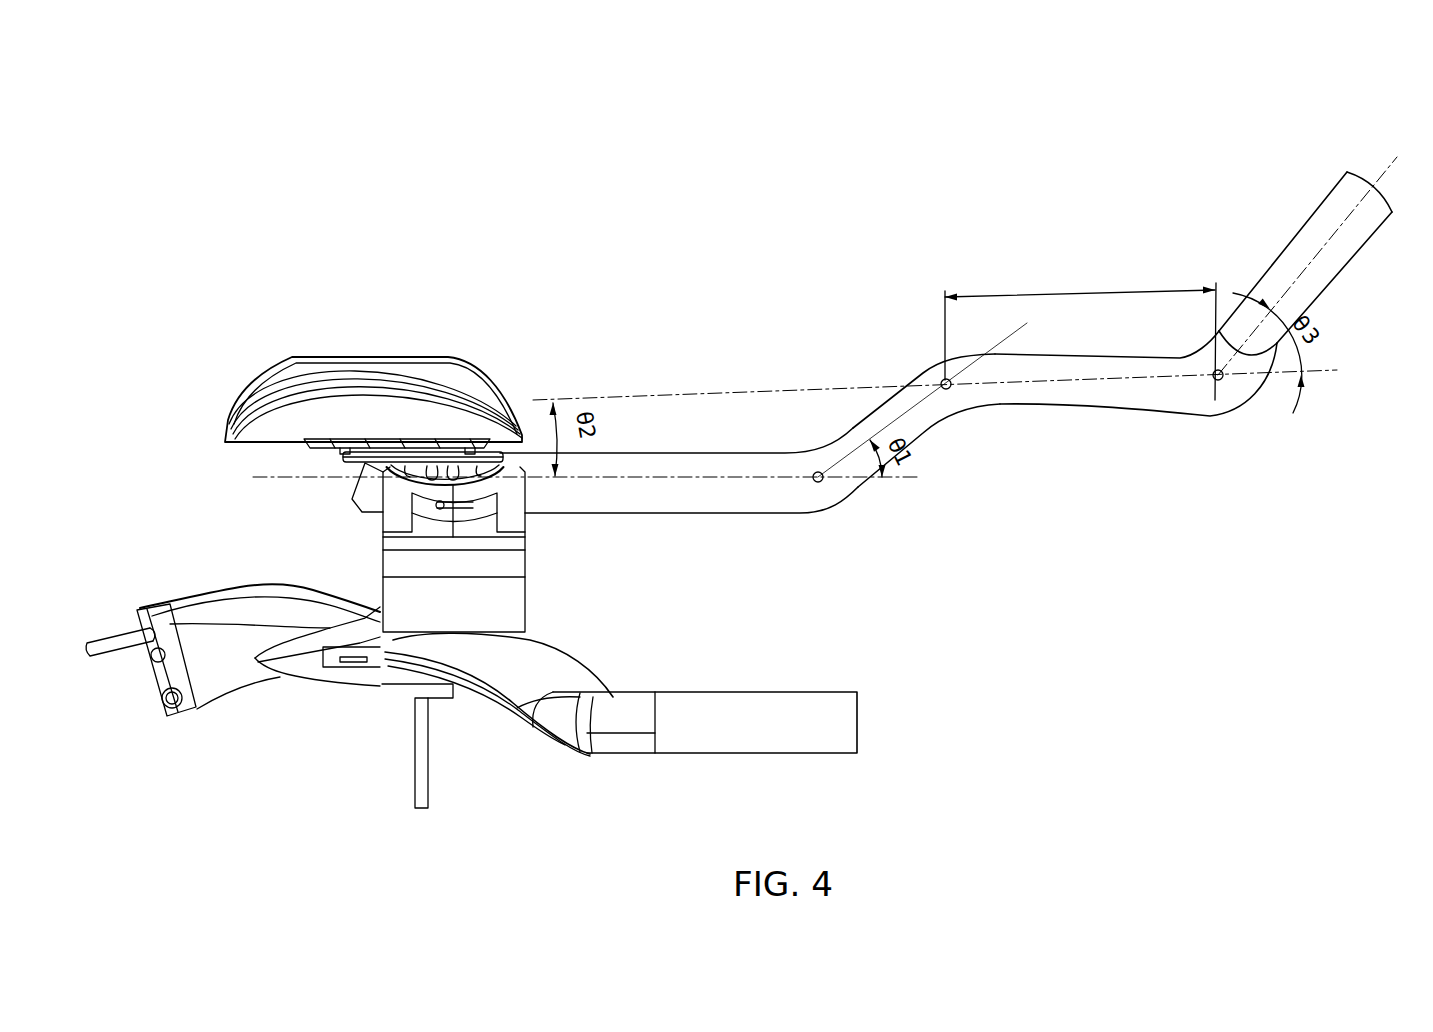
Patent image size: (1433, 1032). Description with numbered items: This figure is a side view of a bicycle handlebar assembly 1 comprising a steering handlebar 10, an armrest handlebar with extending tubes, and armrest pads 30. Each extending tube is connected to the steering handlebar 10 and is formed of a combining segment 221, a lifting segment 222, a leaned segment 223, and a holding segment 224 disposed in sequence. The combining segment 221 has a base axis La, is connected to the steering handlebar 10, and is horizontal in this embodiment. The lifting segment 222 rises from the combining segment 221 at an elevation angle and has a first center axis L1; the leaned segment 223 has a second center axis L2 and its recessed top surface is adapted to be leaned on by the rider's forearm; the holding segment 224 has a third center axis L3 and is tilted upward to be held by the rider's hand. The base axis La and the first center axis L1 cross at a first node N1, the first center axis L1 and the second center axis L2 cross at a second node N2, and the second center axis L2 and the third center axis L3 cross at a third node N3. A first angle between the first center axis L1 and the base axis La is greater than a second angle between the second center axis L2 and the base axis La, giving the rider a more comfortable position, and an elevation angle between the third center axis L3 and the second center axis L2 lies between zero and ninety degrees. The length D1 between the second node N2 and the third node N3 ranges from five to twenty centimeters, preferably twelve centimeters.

The bicycle handlebar assembly 1 is at (1092, 246).
The steering handlebar 10 is at (795, 748).
The armrest pad 30 is at (282, 358).
The combining segment 221 is at (683, 495).
The lifting segment 222 is at (920, 418).
The leaned segment 223 is at (1102, 392).
The holding segment 224 is at (1332, 267).
The first node N1 is at (820, 488).
The second node N2 is at (943, 378).
The third node N3 is at (1215, 400).
The first center axis L1 is at (897, 420).
The second center axis L2 is at (768, 390).
The third center axis L3 is at (1381, 177).
The base axis La is at (627, 478).
The length between the second node and the third node D1 is at (1080, 331).